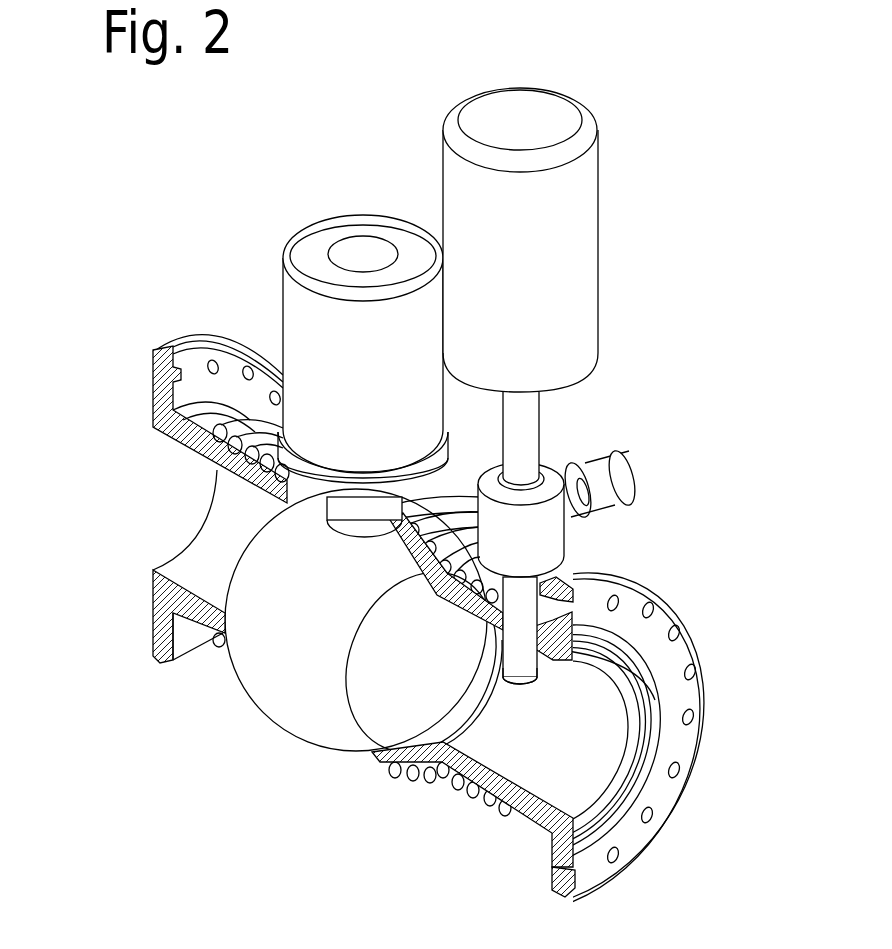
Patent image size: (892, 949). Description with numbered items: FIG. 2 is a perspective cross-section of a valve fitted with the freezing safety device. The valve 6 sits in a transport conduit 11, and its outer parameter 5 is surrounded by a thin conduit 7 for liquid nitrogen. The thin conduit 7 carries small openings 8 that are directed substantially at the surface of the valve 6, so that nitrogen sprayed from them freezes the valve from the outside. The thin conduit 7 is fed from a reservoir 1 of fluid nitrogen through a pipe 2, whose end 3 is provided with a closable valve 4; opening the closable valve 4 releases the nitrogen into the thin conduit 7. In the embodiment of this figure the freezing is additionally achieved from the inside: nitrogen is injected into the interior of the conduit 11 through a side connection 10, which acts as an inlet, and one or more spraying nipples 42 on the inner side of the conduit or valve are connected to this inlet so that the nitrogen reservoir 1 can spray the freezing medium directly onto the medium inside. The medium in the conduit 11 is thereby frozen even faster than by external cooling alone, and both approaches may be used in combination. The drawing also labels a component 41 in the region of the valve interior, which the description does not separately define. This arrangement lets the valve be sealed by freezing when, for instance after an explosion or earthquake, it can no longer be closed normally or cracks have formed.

The reservoir 1 is at (535, 265).
The pipe 2 is at (552, 410).
The end 3 is at (553, 458).
The closable valve 4 is at (617, 480).
The outer parameter 5 is at (190, 418).
The valve 6 is at (327, 372).
The thin conduit 7 is at (220, 658).
The small openings 8 is at (505, 790).
The side connection 10 is at (527, 618).
The conduit 11 is at (563, 720).
The valve ball 41 is at (515, 693).
The spraying nipple 42 is at (525, 672).